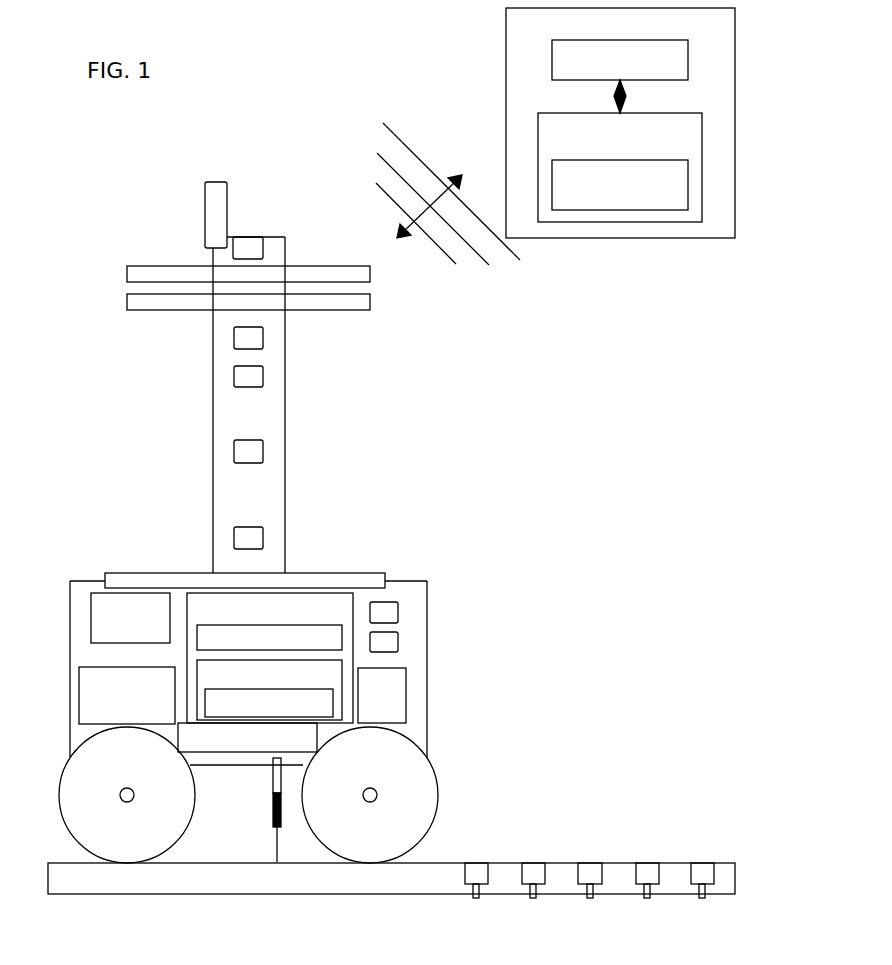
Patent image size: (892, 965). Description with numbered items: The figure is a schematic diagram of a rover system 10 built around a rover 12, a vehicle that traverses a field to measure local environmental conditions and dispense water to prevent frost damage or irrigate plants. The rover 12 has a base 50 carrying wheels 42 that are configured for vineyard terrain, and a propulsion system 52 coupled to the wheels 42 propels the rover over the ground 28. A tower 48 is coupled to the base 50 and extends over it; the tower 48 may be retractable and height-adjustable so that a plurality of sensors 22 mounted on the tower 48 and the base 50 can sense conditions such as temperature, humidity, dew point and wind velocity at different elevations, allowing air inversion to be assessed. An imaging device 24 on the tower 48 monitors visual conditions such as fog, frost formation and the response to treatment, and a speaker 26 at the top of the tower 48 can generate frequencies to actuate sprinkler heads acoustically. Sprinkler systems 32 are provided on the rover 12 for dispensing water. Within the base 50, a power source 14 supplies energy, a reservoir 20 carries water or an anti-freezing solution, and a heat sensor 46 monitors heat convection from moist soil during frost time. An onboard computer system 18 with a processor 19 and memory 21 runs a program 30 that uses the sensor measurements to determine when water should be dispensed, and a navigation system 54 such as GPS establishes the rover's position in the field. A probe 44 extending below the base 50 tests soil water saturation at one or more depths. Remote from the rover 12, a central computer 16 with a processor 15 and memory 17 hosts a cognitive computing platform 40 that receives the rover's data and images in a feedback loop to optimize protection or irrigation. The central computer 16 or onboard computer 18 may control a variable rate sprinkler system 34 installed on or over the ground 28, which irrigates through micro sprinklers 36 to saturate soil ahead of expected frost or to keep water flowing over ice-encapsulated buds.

The rover system 10 is at (549, 431).
The rover 12 is at (382, 517).
The power source 14 is at (130, 618).
The processor 15 is at (620, 60).
The central computer 16 is at (620, 123).
The memory 17 is at (620, 167).
The onboard computer system 18 is at (270, 658).
The processor 19 is at (269, 637).
The reservoir 20 is at (127, 695).
The memory 21 is at (269, 690).
The sensors 22 is at (255, 245).
The imaging device 24 is at (263, 338).
The speaker 26 is at (213, 190).
The ground 28 is at (566, 875).
The program 30 is at (269, 703).
The sprinkler system 32 is at (150, 272).
The sprinkler system 34 is at (700, 838).
The micro sprinklers 36 is at (535, 870).
The cognitive computing platform 40 is at (620, 185).
The wheels 42 is at (75, 763).
The probe 44 is at (271, 780).
The heat sensor 46 is at (398, 612).
The tower 48 is at (221, 431).
The base 50 is at (415, 588).
The propulsion system 52 is at (247, 737).
The navigation system 54 is at (382, 695).